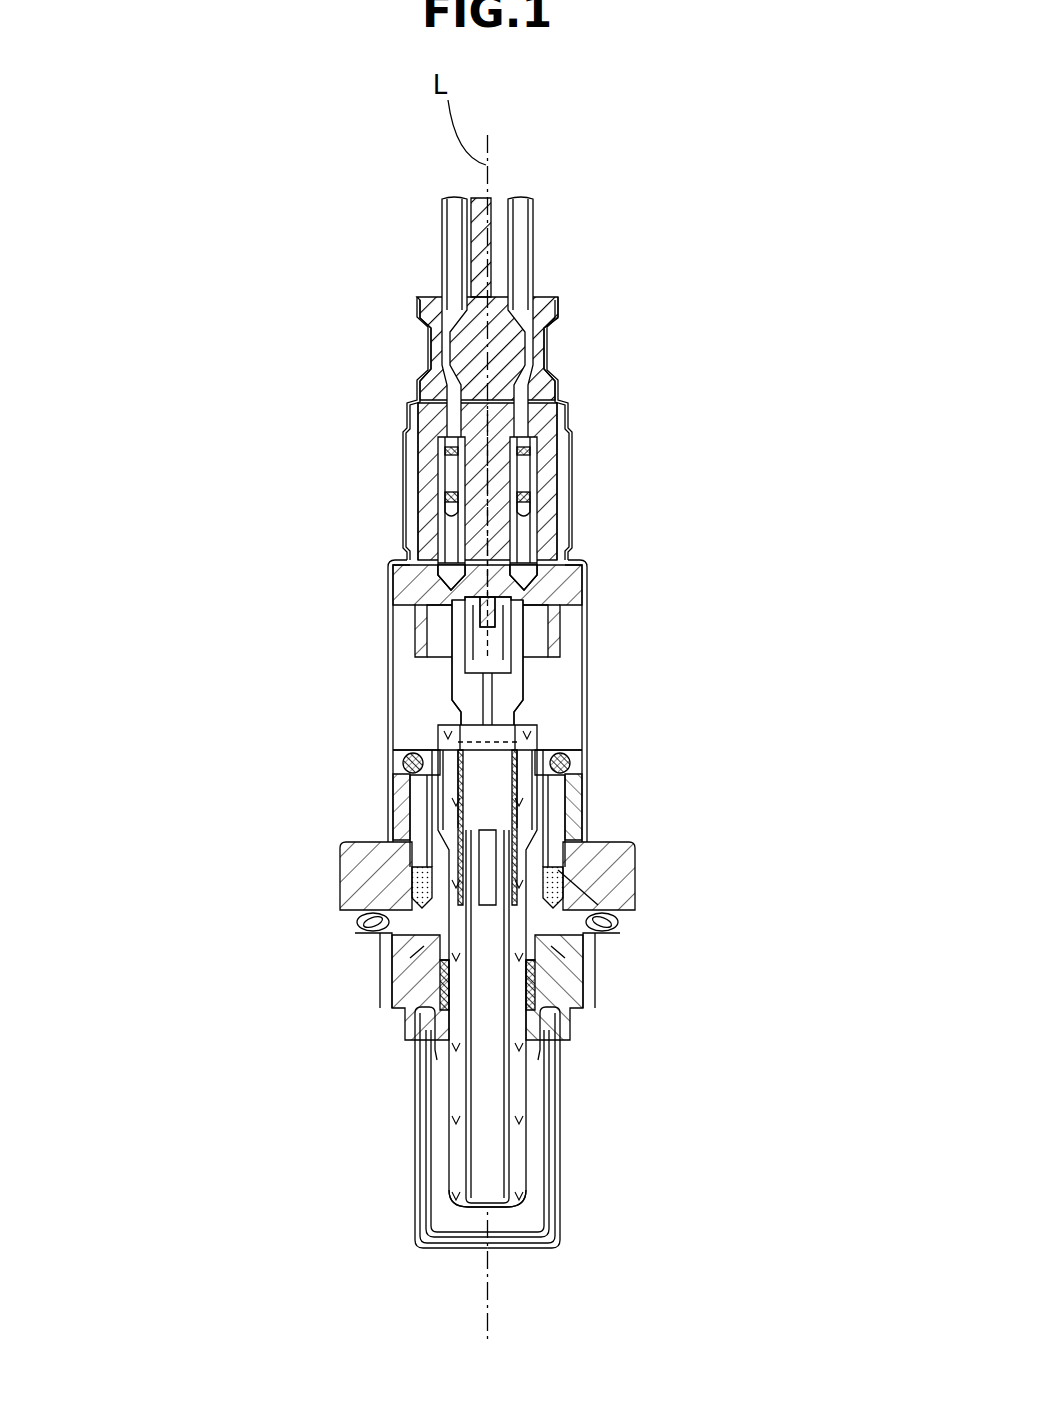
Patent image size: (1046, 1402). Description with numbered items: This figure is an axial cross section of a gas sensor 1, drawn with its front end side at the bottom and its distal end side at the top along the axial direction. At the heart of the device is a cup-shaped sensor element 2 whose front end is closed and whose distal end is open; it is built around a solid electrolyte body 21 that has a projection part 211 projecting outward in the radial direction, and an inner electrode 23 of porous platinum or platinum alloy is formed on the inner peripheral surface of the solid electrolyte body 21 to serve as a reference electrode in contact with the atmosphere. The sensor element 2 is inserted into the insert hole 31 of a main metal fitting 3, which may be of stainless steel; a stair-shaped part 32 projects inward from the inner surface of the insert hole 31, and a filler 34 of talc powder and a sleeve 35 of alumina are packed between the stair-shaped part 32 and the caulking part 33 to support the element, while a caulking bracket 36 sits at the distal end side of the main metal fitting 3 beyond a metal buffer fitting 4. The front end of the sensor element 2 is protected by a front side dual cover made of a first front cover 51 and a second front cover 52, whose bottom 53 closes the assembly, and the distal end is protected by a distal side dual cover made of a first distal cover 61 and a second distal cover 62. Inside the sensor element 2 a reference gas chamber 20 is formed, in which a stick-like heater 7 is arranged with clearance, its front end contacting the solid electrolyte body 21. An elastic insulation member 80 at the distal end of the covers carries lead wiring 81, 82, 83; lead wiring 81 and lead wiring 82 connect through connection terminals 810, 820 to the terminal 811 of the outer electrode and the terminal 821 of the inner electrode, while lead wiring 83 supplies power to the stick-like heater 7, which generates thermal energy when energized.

The gas sensor 1 is at (228, 925).
The sensor element 2 is at (533, 1084).
The main metal fitting 3 is at (620, 893).
The buffer fitting 4 is at (418, 960).
The stick-like heater 7 is at (487, 1100).
The reference gas chamber 20 is at (382, 940).
The solid electrolyte body 21 is at (423, 868).
The inner electrode 23 is at (362, 923).
The insert hole 31 is at (410, 886).
The stair-shaped part 32 is at (440, 992).
The caulking part 33 is at (415, 748).
The filler 34 is at (556, 850).
The sleeve 35 is at (422, 813).
The caulking bracket 36 is at (412, 763).
The first front cover 51 is at (548, 1168).
The second front cover 52 is at (560, 1226).
The cover bottom 53 is at (452, 1215).
The first distal cover 61 is at (592, 735).
The second distal cover 62 is at (574, 482).
The elastic insulation member 80 is at (537, 336).
The lead wiring 81 is at (522, 252).
The lead wiring 82 is at (456, 250).
The lead wiring 83 is at (499, 198).
The projection part 211 is at (612, 880).
The connection terminal 810 is at (532, 540).
The terminal 811 is at (527, 702).
The connection terminal 820 is at (446, 540).
The terminal 821 is at (452, 682).